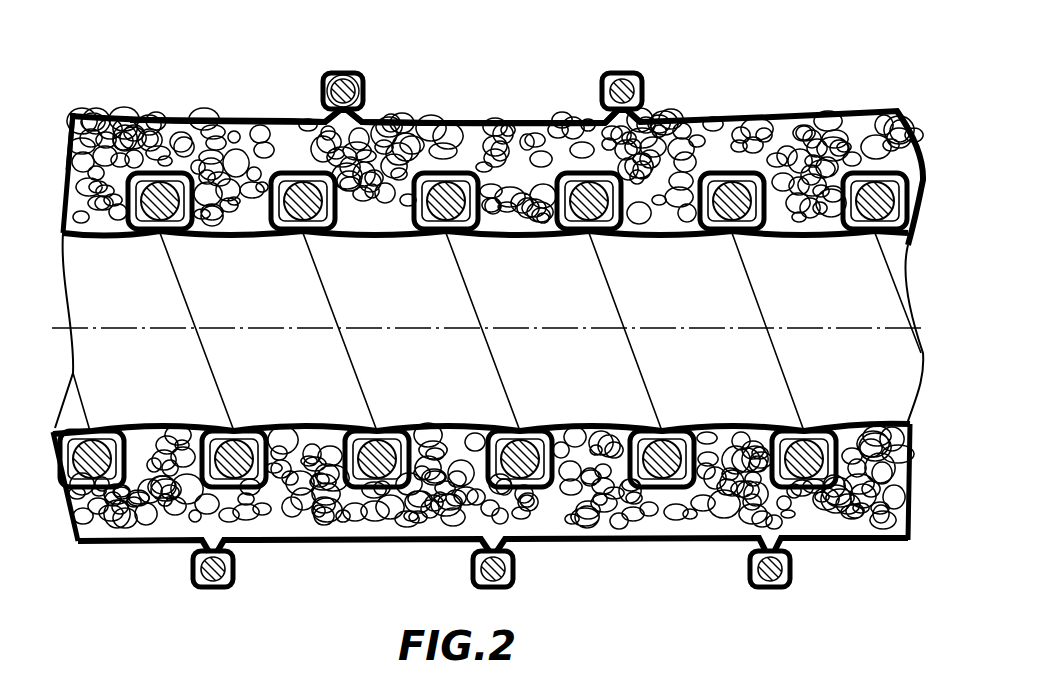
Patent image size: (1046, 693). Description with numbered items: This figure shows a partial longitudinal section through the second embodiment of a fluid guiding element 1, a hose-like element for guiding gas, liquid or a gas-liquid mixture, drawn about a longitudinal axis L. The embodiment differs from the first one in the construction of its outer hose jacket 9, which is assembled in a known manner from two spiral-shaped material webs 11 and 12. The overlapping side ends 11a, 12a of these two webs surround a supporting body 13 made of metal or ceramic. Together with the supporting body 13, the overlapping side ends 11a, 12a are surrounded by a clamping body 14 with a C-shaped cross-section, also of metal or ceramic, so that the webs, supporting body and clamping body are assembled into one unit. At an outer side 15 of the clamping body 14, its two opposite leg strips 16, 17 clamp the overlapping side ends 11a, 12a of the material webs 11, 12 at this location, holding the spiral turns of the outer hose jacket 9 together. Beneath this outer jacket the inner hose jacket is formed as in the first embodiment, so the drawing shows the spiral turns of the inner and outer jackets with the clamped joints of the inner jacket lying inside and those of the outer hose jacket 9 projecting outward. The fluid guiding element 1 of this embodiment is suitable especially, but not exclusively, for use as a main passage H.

The fluid guiding element 1 is at (152, 99).
The outer hose jacket 9 is at (775, 112).
The spiral-shaped material web 11 is at (213, 118).
The overlapping side end 11a is at (298, 110).
The spiral-shaped material web 12 is at (523, 127).
The overlapping side end 12a is at (380, 118).
The supporting body 13 is at (355, 68).
The clamping body 14 is at (360, 80).
The outer side 15 is at (447, 130).
The leg strip 16 is at (587, 108).
The leg strip 17 is at (647, 115).
The longitudinal axis L is at (562, 327).
The main passage H is at (556, 568).